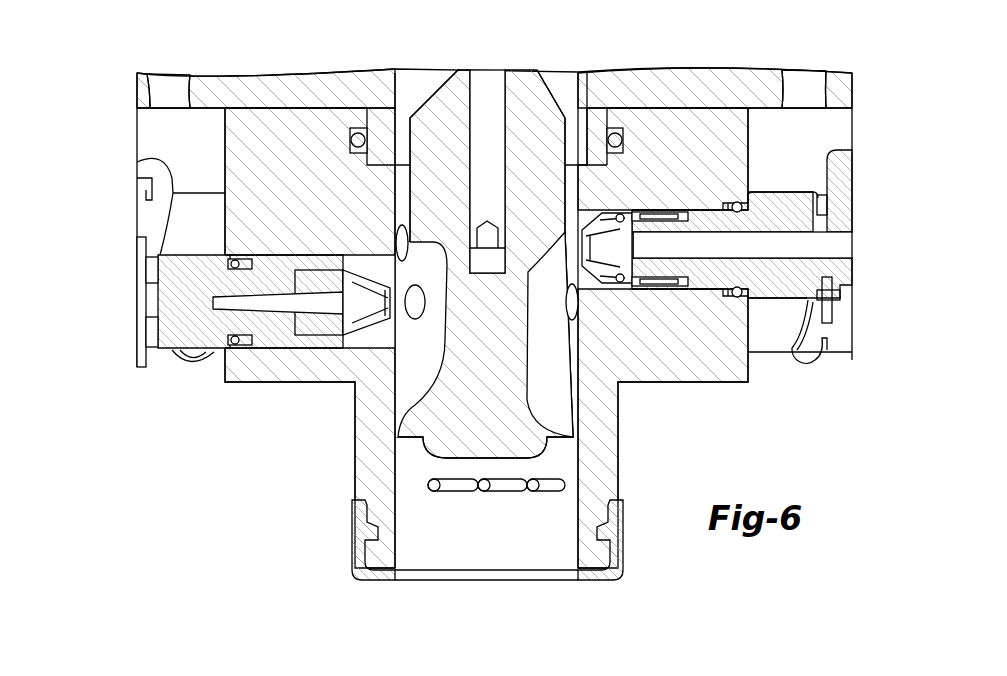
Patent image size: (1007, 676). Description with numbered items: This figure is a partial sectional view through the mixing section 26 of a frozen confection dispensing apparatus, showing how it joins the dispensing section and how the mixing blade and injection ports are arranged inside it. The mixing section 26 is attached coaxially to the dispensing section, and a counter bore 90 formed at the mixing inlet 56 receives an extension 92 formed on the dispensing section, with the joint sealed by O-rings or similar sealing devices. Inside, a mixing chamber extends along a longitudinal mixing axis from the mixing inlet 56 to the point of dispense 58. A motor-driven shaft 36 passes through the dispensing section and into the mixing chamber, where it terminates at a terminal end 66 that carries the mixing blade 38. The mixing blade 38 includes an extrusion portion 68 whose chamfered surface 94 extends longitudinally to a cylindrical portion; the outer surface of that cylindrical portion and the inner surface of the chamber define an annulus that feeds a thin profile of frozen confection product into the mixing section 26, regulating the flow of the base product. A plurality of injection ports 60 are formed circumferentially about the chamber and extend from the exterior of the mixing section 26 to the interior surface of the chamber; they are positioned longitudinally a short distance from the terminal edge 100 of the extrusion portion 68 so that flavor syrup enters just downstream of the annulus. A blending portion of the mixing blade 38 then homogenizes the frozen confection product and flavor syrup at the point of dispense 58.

The mixing section 26 is at (697, 382).
The shaft 36 is at (486, 70).
The mixing blade 38 is at (472, 345).
The mixing inlet 56 is at (735, 108).
The point of dispense 58 is at (590, 582).
The injection ports 60 is at (160, 304).
The terminal end 66 is at (487, 135).
The extrusion portion 68 is at (565, 192).
The counter bore 90 is at (607, 165).
The extension 92 is at (573, 160).
The chamfered surface 94 is at (435, 93).
The terminal edge 100 is at (400, 250).